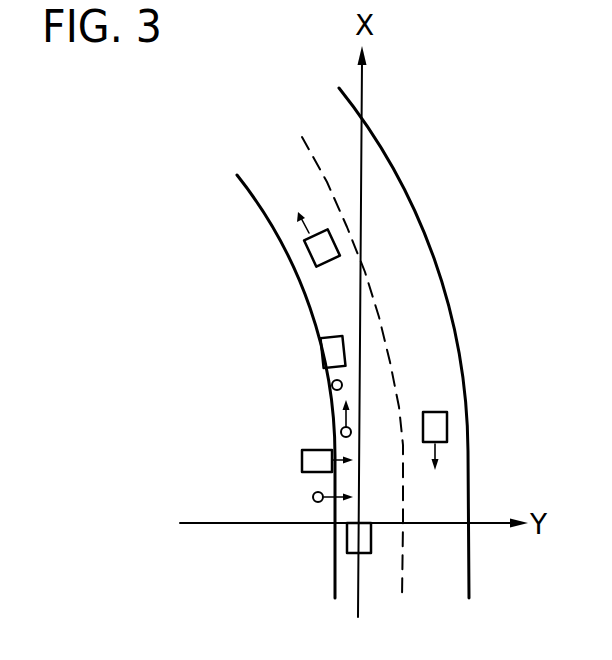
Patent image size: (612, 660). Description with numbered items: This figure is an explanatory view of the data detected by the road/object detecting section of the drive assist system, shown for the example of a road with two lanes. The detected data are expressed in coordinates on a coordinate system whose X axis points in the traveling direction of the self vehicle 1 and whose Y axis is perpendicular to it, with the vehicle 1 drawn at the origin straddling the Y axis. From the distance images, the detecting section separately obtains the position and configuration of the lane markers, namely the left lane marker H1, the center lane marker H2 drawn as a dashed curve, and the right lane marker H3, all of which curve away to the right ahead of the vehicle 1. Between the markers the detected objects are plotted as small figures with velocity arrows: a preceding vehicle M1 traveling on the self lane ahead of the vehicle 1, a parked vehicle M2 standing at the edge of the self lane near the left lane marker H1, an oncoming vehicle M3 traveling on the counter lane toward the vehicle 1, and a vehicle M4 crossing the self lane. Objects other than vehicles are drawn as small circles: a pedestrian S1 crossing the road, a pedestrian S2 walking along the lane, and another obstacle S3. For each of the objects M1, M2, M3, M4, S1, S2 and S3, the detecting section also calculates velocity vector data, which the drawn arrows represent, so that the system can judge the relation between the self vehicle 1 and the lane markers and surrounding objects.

The vehicle 1 is at (347, 537).
The left lane marker H1 is at (273, 229).
The center lane marker H2 is at (302, 137).
The right lane marker H3 is at (420, 213).
The preceding vehicle M1 is at (303, 254).
The parked vehicle M2 is at (321, 353).
The oncoming vehicle M3 is at (447, 425).
The crossing vehicle M4 is at (302, 462).
The pedestrian crossing the road S1 is at (313, 497).
The pedestrian walking along the lane S2 is at (341, 432).
The other obstacle S3 is at (332, 385).